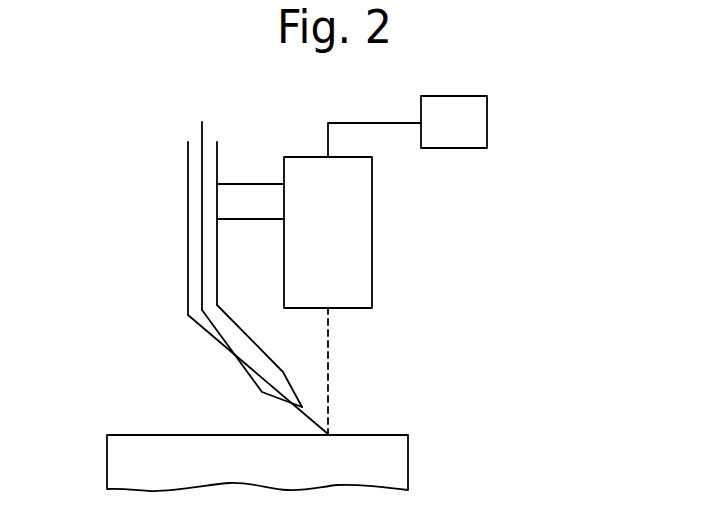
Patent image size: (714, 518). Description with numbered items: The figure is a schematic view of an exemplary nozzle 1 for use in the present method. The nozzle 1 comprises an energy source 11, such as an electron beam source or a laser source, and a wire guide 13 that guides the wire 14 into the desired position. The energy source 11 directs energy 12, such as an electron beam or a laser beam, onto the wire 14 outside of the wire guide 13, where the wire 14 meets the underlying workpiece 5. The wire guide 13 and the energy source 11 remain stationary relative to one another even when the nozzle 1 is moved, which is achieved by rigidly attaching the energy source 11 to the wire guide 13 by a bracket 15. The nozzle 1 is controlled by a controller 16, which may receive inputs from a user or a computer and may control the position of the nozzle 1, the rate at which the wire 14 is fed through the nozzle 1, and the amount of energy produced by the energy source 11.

The nozzle 1 is at (449, 275).
The substrate 5 is at (383, 458).
The energy source 11 is at (355, 207).
The energy 12 is at (328, 352).
The wire guide 13 is at (226, 346).
The wire 14 is at (201, 244).
The bracket 15 is at (253, 183).
The controller 16 is at (473, 117).